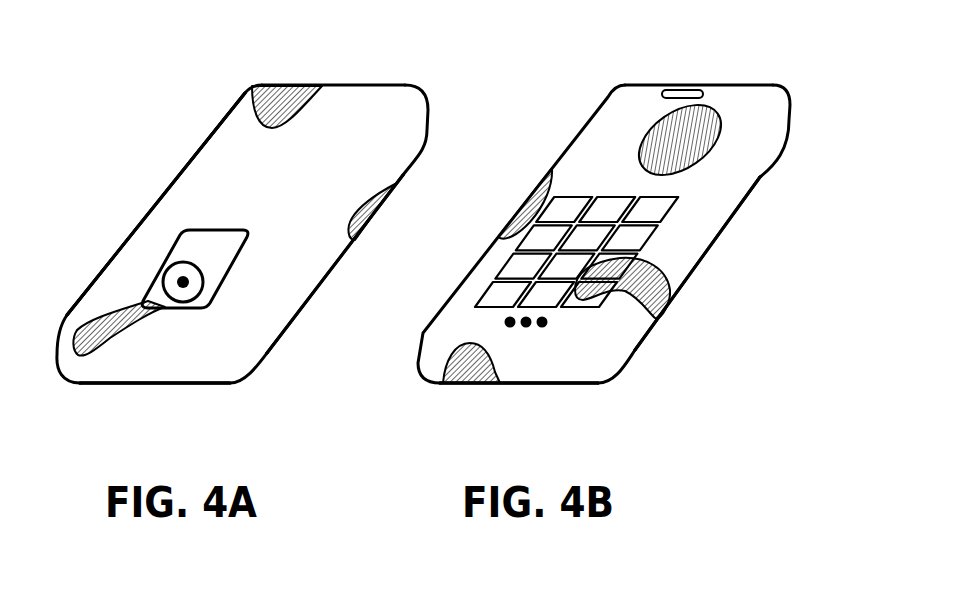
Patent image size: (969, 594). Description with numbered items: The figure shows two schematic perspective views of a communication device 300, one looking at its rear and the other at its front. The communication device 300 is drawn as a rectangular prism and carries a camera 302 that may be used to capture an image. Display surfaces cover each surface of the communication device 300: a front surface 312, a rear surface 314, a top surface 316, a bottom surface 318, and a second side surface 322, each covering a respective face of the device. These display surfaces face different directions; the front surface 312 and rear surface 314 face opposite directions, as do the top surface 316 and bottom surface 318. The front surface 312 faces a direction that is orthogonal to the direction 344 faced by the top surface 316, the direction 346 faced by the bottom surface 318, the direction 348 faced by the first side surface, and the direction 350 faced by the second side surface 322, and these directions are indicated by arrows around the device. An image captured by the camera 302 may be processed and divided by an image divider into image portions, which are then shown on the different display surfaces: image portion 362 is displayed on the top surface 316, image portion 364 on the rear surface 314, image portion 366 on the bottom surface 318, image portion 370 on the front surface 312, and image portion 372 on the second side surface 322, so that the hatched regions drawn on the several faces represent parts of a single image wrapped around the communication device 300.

In FIG. 4A, the communication device 300 is at (146, 120).
In FIG. 4B, the communication device 300 is at (828, 144).
In FIG. 4A, the camera 302 is at (183, 282).
In FIG. 4B, the front surface 312 is at (588, 173).
In FIG. 4A, the rear surface 314 is at (213, 195).
In FIG. 4A, the top surface 316 is at (141, 368).
In FIG. 4B, the bottom surface 318 is at (536, 362).
In FIG. 4A, the second side surface 322 is at (323, 257).
In FIG. 4B, the second side surface 322 is at (703, 225).
In FIG. 4A, the direction 344 is at (107, 393).
In FIG. 4B, the direction 344 is at (695, 80).
In FIG. 4A, the direction 346 is at (327, 80).
In FIG. 4B, the direction 346 is at (490, 396).
In FIG. 4A, the direction 348 is at (135, 214).
In FIG. 4B, the direction 348 is at (485, 233).
In FIG. 4A, the direction 350 is at (357, 247).
In FIG. 4B, the direction 350 is at (737, 264).
In FIG. 4A, the image portion 362 is at (195, 363).
In FIG. 4A, the image portion 364 is at (222, 165).
In FIG. 4B, the image portion 366 is at (585, 362).
In FIG. 4B, the image portion 370 is at (703, 178).
In FIG. 4A, the image portion 372 is at (417, 122).
In FIG. 4B, the image portion 372 is at (622, 337).